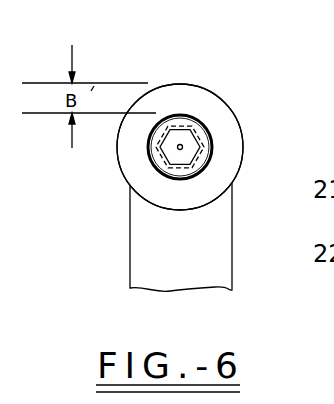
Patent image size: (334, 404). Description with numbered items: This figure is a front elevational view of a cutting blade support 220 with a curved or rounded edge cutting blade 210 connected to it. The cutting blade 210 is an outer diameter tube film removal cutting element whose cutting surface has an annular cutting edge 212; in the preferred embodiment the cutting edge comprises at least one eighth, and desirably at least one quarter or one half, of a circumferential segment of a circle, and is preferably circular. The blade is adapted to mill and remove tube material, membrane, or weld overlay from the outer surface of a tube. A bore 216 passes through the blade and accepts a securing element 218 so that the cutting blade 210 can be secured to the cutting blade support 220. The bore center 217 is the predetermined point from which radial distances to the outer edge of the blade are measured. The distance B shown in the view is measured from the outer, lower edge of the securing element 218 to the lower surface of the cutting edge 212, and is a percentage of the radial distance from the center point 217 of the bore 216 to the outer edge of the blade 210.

The cutting blade 210 is at (206, 85).
The cutting edge 212 is at (241, 119).
The bore 216 is at (156, 149).
The bore center 217 is at (183, 149).
The securing element 218 is at (163, 178).
The cutting blade support 220 is at (130, 248).